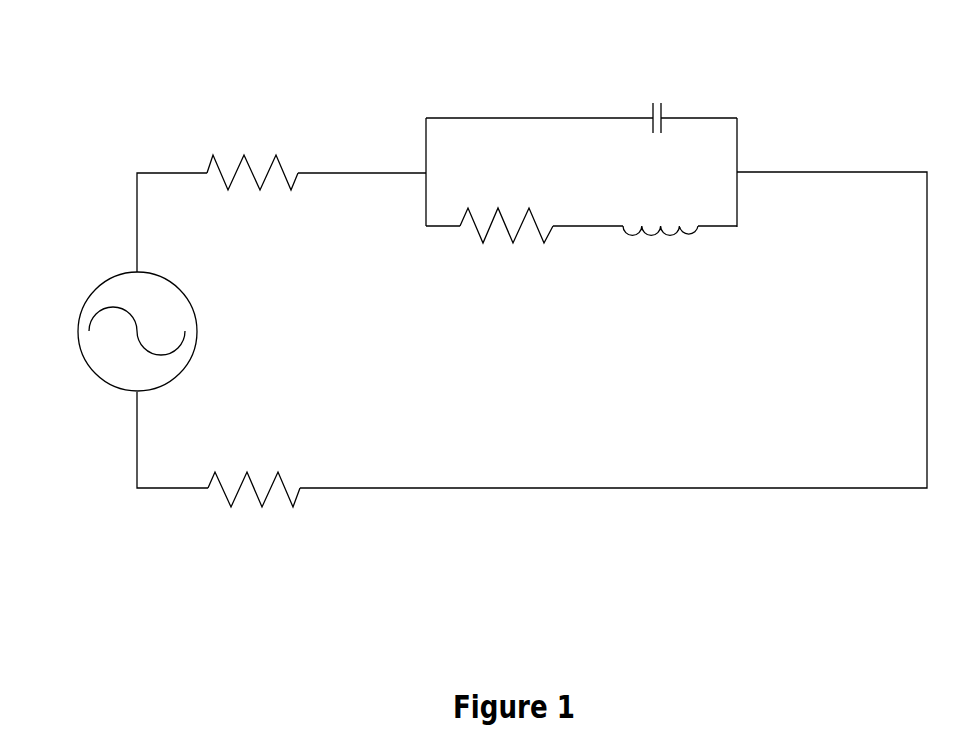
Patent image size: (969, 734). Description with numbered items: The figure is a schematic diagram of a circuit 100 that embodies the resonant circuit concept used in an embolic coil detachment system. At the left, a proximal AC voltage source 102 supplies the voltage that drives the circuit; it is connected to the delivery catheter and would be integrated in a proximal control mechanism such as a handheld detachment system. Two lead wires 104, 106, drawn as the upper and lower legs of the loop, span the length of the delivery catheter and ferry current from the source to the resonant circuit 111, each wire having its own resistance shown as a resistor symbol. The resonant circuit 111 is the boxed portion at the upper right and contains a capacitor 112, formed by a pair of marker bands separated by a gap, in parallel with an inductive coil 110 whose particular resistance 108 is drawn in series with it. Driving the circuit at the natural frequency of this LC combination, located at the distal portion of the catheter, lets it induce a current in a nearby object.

The circuit 100 is at (527, 518).
The proximal AC voltage source 102 is at (78, 303).
The lead wire 104 is at (243, 508).
The lead wire 106 is at (240, 188).
The resistance 108 is at (497, 240).
The inductive coil 110 is at (665, 240).
The resonant circuit 111 is at (752, 131).
The capacitor 112 is at (658, 97).